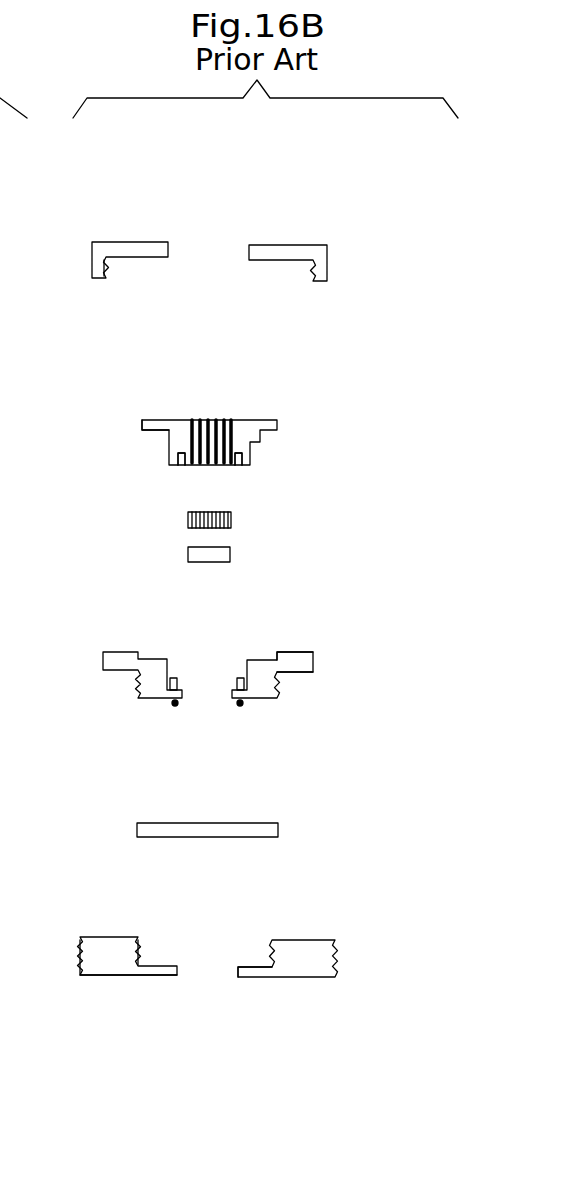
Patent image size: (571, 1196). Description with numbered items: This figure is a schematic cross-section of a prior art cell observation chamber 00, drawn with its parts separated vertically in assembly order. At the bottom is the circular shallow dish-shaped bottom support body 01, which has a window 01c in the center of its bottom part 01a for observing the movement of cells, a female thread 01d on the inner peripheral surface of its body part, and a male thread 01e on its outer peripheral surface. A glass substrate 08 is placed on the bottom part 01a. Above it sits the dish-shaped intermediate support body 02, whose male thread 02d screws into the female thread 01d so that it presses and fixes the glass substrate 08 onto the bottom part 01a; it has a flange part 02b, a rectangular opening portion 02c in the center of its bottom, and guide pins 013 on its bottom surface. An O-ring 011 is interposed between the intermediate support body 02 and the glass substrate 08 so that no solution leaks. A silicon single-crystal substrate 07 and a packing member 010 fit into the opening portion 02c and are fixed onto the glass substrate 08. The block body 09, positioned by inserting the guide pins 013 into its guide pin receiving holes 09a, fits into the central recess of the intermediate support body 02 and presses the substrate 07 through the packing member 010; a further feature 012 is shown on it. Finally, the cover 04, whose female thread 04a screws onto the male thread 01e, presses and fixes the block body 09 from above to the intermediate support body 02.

The cell observation chamber 00 is at (324, 194).
The cover 04 is at (382, 263).
The female thread 04a is at (108, 270).
The block body 09 is at (281, 421).
The heat sink boss 012 is at (166, 433).
The guide pin receiving holes 09a is at (181, 465).
The packing member 010 is at (188, 521).
The substrate 07 is at (230, 553).
The intermediate support body 02 is at (383, 660).
The guide pins 013 is at (245, 677).
The flange part 02b is at (297, 653).
The male thread 02d is at (278, 688).
The O-ring 011 is at (175, 706).
The rectangular opening portion 02c is at (240, 706).
The glass substrate 08 is at (278, 830).
The bottom support body 01 is at (390, 950).
The female thread 01d is at (143, 952).
The male thread 01e is at (78, 960).
The bottom part 01a is at (123, 976).
The window 01c is at (237, 979).